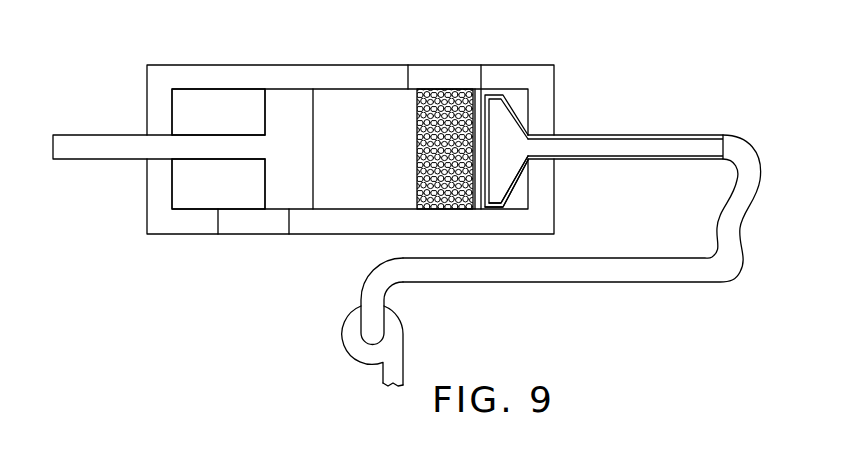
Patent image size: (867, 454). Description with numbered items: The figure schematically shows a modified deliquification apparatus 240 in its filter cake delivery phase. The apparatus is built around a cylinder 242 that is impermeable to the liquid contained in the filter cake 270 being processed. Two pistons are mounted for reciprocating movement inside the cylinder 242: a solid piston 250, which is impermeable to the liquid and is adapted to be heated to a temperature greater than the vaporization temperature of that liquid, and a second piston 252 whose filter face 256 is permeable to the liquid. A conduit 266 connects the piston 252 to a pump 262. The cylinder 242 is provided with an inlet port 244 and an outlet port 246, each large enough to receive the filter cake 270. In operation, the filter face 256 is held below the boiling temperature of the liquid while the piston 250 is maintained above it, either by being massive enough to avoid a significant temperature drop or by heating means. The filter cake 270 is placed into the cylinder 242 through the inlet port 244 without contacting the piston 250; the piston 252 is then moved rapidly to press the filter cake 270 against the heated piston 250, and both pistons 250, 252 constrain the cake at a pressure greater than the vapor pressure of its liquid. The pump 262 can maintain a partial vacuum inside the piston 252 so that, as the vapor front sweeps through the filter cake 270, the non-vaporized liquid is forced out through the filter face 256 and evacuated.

The deliquification apparatus 240 is at (129, 58).
The cylinder 242 is at (177, 72).
The inlet port 244 is at (418, 73).
The outlet port 246 is at (243, 228).
The piston 250 is at (275, 108).
The piston 252 is at (516, 103).
The filter face 256 is at (488, 174).
The pump 262 is at (343, 329).
The conduit 266 is at (720, 282).
The filter cake 270 is at (418, 139).